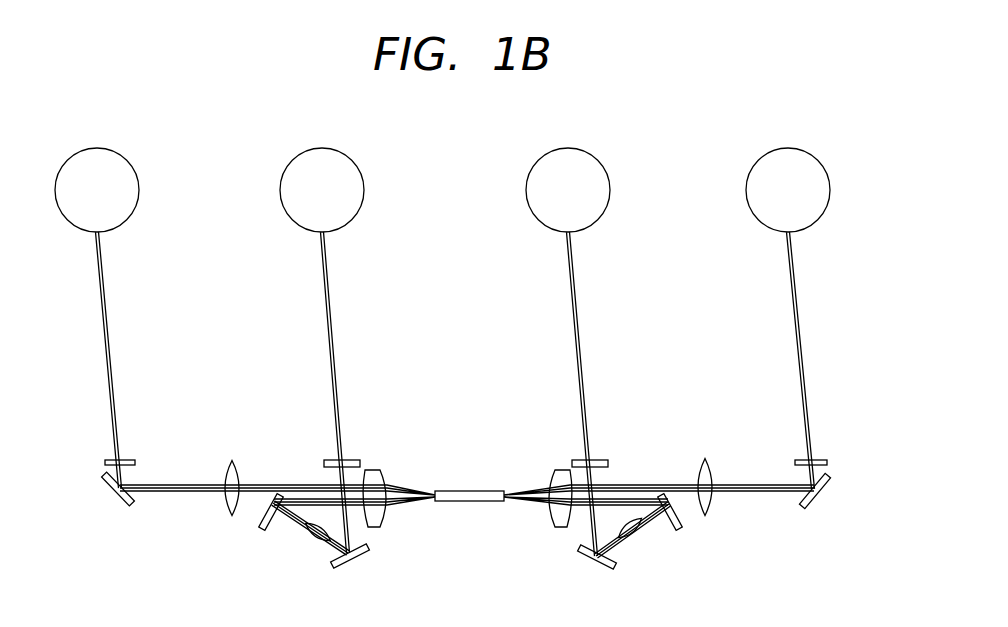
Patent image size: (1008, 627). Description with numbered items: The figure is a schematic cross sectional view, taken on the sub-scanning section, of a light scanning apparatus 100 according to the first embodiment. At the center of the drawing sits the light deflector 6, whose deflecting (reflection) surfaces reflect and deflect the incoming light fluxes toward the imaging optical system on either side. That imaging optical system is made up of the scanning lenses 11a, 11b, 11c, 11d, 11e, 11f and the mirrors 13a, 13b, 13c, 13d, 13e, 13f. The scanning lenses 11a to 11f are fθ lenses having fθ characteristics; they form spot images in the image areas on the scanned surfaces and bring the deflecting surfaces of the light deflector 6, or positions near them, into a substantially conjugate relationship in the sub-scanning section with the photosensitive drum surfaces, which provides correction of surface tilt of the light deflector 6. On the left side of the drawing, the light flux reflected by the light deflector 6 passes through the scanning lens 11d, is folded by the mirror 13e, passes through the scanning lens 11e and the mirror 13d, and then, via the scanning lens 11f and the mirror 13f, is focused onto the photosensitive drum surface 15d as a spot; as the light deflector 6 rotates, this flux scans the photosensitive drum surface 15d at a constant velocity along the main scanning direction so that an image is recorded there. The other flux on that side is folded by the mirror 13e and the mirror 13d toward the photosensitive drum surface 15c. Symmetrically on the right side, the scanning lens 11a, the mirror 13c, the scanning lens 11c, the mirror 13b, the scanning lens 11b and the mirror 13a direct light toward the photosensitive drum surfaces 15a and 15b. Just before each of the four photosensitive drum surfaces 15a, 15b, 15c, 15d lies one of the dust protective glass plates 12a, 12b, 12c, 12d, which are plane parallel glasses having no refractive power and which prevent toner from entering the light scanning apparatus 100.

The light scanning apparatus 100 is at (152, 538).
The light deflector 6 is at (471, 491).
The scanning lens 11a is at (560, 470).
The scanning lens 11b is at (705, 459).
The scanning lens 11c is at (638, 543).
The scanning lens 11d is at (374, 470).
The scanning lens 11e is at (305, 542).
The scanning lens 11f is at (232, 462).
The dust protective glass plate 12a is at (820, 458).
The dust protective glass plate 12b is at (600, 459).
The dust protective glass plate 12c is at (327, 459).
The dust protective glass plate 12d is at (133, 459).
The mirror 13a is at (812, 505).
The mirror 13b is at (678, 528).
The mirror 13c is at (587, 560).
The mirror 13d is at (263, 527).
The mirror 13e is at (357, 563).
The mirror 13f is at (114, 492).
The photosensitive drum surface 15a is at (794, 156).
The photosensitive drum surface 15b is at (572, 156).
The photosensitive drum surface 15c is at (328, 156).
The photosensitive drum surface 15d is at (101, 156).